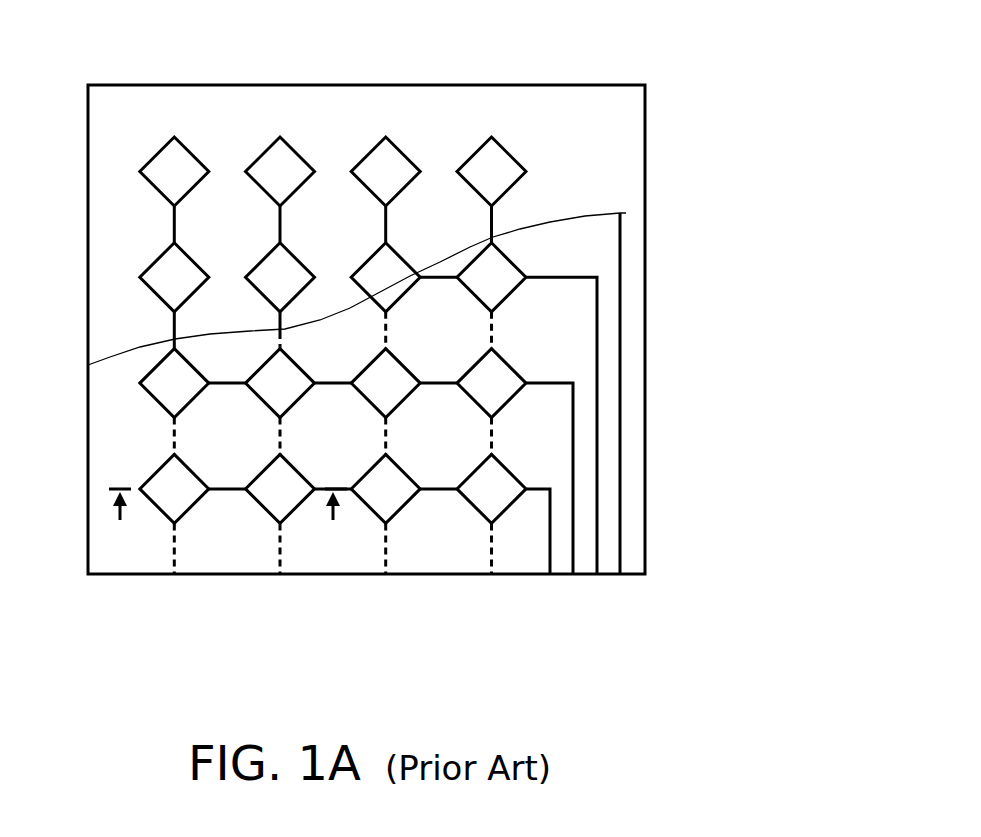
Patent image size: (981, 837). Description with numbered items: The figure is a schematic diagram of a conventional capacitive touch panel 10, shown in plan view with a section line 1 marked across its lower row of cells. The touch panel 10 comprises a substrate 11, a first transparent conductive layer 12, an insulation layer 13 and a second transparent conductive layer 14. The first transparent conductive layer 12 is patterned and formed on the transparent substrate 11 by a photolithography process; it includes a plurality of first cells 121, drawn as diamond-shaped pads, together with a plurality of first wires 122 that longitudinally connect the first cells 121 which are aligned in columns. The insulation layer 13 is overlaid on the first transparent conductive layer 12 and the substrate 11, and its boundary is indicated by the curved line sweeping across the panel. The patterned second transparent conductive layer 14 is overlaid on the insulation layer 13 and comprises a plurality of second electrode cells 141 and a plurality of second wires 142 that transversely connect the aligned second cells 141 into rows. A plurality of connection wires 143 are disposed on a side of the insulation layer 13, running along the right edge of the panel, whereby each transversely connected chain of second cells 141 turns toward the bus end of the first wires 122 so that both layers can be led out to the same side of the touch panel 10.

The section line 1 is at (228, 524).
The touch panel 10 is at (688, 59).
The substrate 11 is at (596, 85).
The first transparent conductive layer 12 is at (718, 140).
The first cells 121 is at (514, 153).
The first wires 122 is at (493, 217).
The insulation layer 13 is at (110, 356).
The second transparent conductive layer 14 is at (252, 648).
The second electrode cells 141 is at (157, 508).
The second wires 142 is at (227, 490).
The connection wires 143 is at (620, 343).